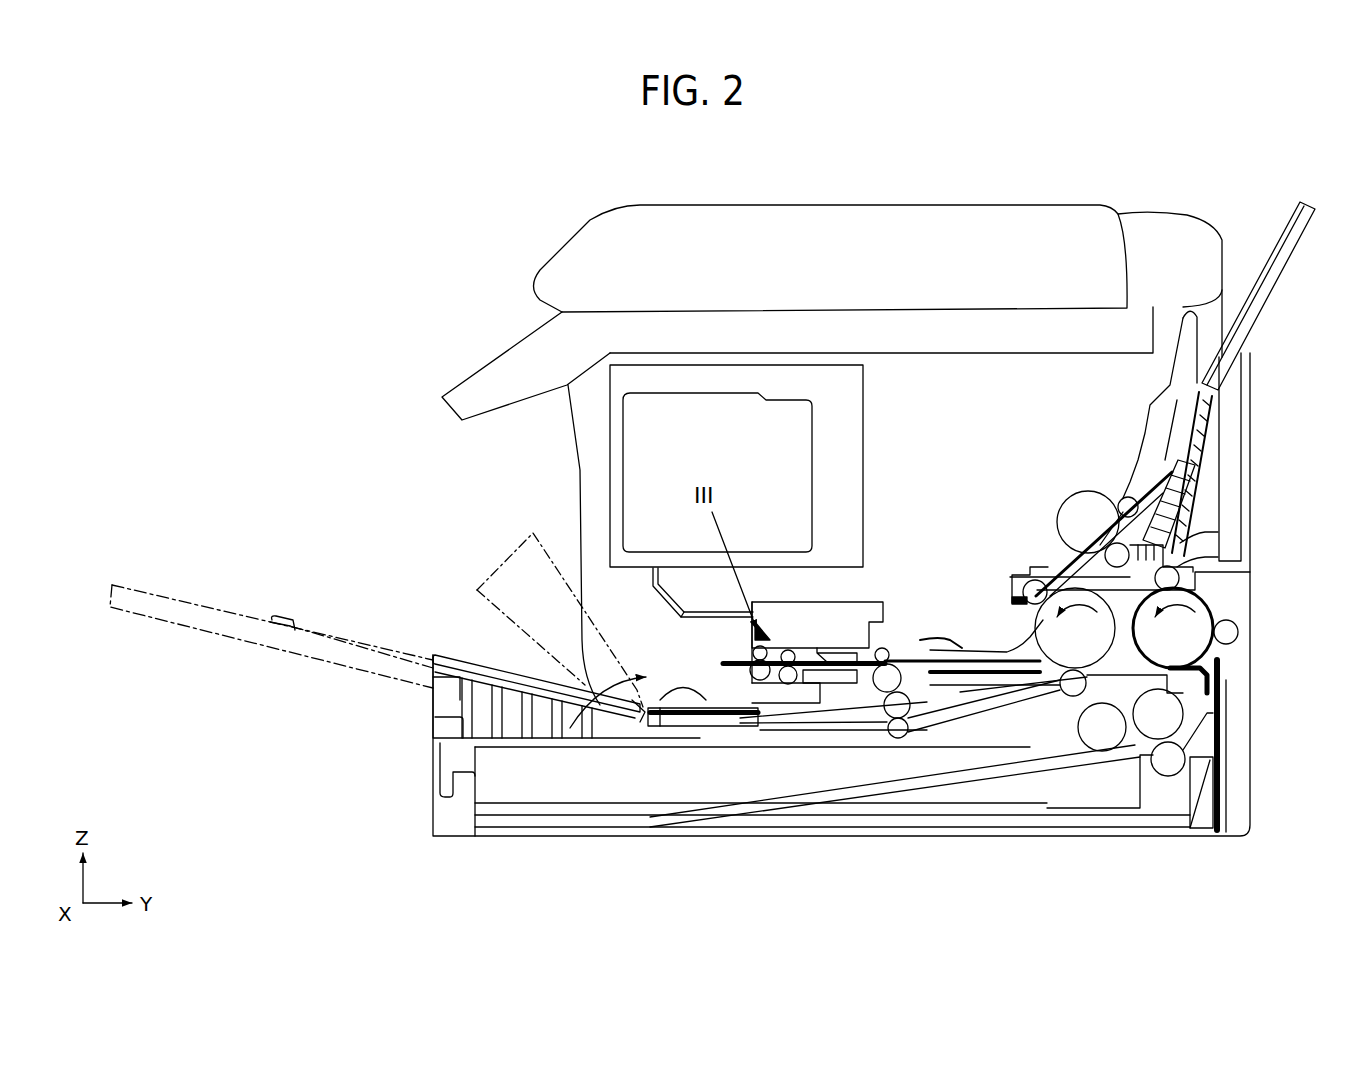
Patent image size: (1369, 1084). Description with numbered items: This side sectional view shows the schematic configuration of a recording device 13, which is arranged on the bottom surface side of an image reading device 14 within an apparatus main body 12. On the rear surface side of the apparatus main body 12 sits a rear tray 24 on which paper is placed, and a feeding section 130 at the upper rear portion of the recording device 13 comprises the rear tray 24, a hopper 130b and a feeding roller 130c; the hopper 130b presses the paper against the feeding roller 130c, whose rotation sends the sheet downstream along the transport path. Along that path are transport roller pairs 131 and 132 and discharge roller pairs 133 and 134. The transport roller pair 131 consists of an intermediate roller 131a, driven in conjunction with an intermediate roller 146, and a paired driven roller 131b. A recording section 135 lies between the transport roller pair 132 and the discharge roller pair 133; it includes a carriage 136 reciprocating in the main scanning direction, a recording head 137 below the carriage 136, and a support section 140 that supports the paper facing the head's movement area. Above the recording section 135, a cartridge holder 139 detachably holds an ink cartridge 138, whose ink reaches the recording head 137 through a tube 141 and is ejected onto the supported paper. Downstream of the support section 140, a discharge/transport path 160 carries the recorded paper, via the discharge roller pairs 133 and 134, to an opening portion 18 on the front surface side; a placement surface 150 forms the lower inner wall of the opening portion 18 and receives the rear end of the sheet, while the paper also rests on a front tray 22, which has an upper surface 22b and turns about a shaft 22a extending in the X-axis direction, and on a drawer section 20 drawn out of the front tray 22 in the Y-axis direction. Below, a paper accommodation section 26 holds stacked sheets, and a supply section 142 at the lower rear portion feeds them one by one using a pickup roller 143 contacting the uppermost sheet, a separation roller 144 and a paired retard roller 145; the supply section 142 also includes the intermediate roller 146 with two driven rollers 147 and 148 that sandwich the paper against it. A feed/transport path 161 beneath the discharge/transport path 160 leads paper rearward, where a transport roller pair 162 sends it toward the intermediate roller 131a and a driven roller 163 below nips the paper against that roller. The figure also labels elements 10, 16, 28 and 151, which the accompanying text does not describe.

The printing apparatus 10 is at (1288, 356).
The apparatus main body 12 is at (1250, 629).
The recording device 13 is at (1250, 601).
The image reading device 14 is at (938, 335).
The operation panel arm 16 is at (502, 365).
The opening portion 18 is at (582, 752).
The drawer section 20 is at (228, 612).
The front tray 22 is at (500, 565).
The shaft 22a is at (633, 687).
The upper surface 22b is at (447, 655).
The rear tray 24 is at (1276, 240).
The paper accommodation section 26 is at (433, 795).
The top cover 28 is at (838, 206).
The feeding section 130 is at (1130, 430).
The hopper 130b is at (1136, 498).
The feeding roller 130c is at (1060, 498).
The transport roller pair 131 is at (1013, 574).
The intermediate roller 131a is at (1020, 648).
The driven roller 131b is at (1012, 587).
The transport roller pair 132 is at (885, 648).
The discharge roller pair 133 is at (790, 690).
The discharge roller pair 134 is at (742, 653).
The recording section 135 is at (878, 578).
The carriage 136 is at (835, 600).
The recording head 137 is at (826, 652).
The ink cartridge 138 is at (620, 472).
The cartridge holder 139 is at (608, 420).
The support section 140 is at (840, 700).
The tube 141 is at (657, 608).
The supply section 142 is at (1234, 690).
The pickup roller 143 is at (1050, 745).
The separation roller 144 is at (1110, 768).
The retard roller 145 is at (1140, 775).
The intermediate roller 146 is at (1215, 590).
The driven roller 147 is at (1240, 640).
The driven roller 148 is at (1215, 535).
The placement surface 150 is at (700, 745).
The feed guide 151 is at (677, 720).
The discharge/transport path 160 is at (774, 642).
The feed/transport path 161 is at (773, 717).
The transport roller pair 162 is at (906, 738).
The driven roller 163 is at (1066, 696).